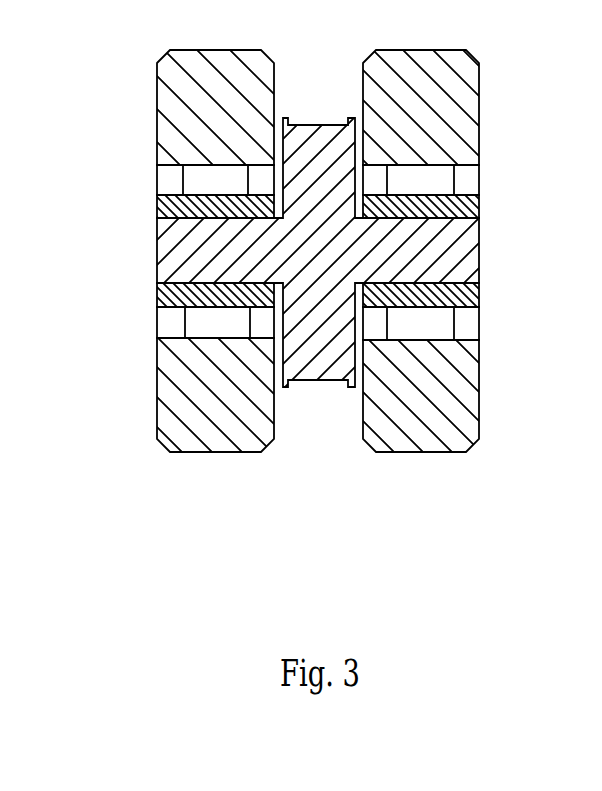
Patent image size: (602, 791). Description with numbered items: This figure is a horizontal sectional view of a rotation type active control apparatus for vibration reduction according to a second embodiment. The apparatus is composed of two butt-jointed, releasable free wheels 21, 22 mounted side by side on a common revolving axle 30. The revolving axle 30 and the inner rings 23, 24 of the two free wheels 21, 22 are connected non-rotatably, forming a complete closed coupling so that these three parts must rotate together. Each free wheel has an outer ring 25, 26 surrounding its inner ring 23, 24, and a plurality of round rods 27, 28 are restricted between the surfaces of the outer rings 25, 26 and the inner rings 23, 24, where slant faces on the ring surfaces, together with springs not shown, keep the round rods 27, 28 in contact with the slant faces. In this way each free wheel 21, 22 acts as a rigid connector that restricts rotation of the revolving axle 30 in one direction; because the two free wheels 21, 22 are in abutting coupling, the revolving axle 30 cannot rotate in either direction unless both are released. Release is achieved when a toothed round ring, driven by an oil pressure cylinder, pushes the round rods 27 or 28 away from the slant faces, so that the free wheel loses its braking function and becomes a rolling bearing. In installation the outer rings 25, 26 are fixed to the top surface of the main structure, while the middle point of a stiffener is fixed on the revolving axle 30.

The free wheel 21 is at (173, 443).
The free wheel 22 is at (438, 442).
The inner ring 23 is at (173, 208).
The inner ring 24 is at (475, 296).
The outer ring 25 is at (175, 85).
The outer ring 26 is at (465, 100).
The round rod 27 is at (165, 162).
The round rod 28 is at (435, 185).
The revolving axle 30 is at (467, 247).